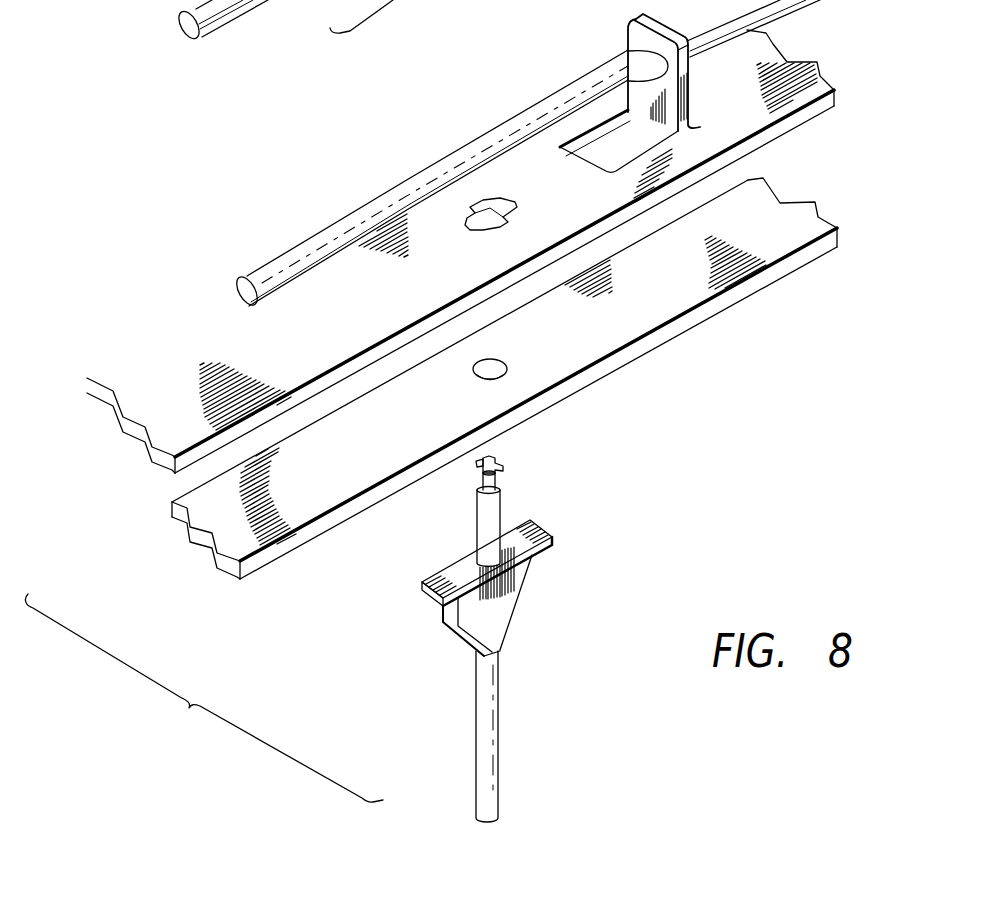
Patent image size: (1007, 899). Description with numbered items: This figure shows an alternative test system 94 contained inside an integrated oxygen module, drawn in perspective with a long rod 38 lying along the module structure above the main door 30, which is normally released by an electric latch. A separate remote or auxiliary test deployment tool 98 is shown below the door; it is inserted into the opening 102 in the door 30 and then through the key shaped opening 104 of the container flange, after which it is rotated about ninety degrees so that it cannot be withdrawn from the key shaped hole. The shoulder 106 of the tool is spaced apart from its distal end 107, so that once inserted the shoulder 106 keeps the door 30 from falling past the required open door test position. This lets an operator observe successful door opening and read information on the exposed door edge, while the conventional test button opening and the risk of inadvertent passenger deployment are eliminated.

The main door 30 is at (735, 291).
The guide rod 38 is at (545, 112).
The test system 94 is at (810, 181).
The test deployment tool 98 is at (502, 618).
The opening 102 is at (503, 362).
The key shaped opening 104 is at (477, 207).
The shoulder 106 is at (466, 568).
The distal end 107 is at (498, 452).